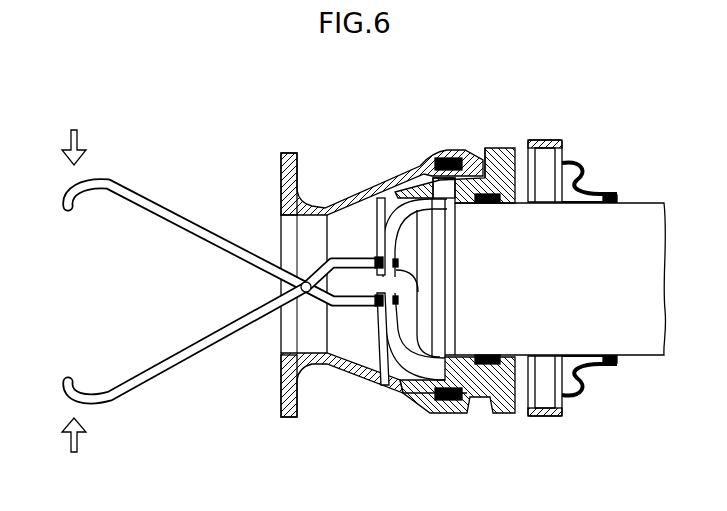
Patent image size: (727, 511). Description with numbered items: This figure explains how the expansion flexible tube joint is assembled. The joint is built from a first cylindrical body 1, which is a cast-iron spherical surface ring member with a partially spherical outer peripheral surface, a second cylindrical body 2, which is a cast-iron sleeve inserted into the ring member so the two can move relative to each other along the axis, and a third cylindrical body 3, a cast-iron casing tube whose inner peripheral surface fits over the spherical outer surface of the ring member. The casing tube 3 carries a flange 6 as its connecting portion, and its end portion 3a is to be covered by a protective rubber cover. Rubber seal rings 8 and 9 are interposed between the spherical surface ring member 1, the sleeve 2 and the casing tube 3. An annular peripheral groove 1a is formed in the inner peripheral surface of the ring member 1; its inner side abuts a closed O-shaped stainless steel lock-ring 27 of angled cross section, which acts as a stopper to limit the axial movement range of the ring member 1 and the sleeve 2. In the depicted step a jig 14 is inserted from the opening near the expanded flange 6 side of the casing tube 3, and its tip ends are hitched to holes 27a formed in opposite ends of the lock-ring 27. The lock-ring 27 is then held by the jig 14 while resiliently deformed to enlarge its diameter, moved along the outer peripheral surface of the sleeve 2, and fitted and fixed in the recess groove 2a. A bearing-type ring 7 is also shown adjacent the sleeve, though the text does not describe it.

The first cylindrical body (spherical surface ring member) 1 is at (484, 162).
The annular peripheral groove 1a is at (438, 181).
The second cylindrical body (sleeve) 2 is at (644, 349).
The recess groove 2a is at (452, 325).
The third cylindrical body (casing tube) 3 is at (380, 176).
The end portion of the casing tube 3a is at (507, 418).
The flange 6 is at (281, 394).
The bearing ring 7 is at (563, 416).
The rubber seal ring 8 is at (497, 205).
The rubber seal ring 9 is at (445, 162).
The jig 14 is at (147, 186).
The lock-ring 27 is at (400, 288).
The holes of the lock-ring 27a is at (384, 345).